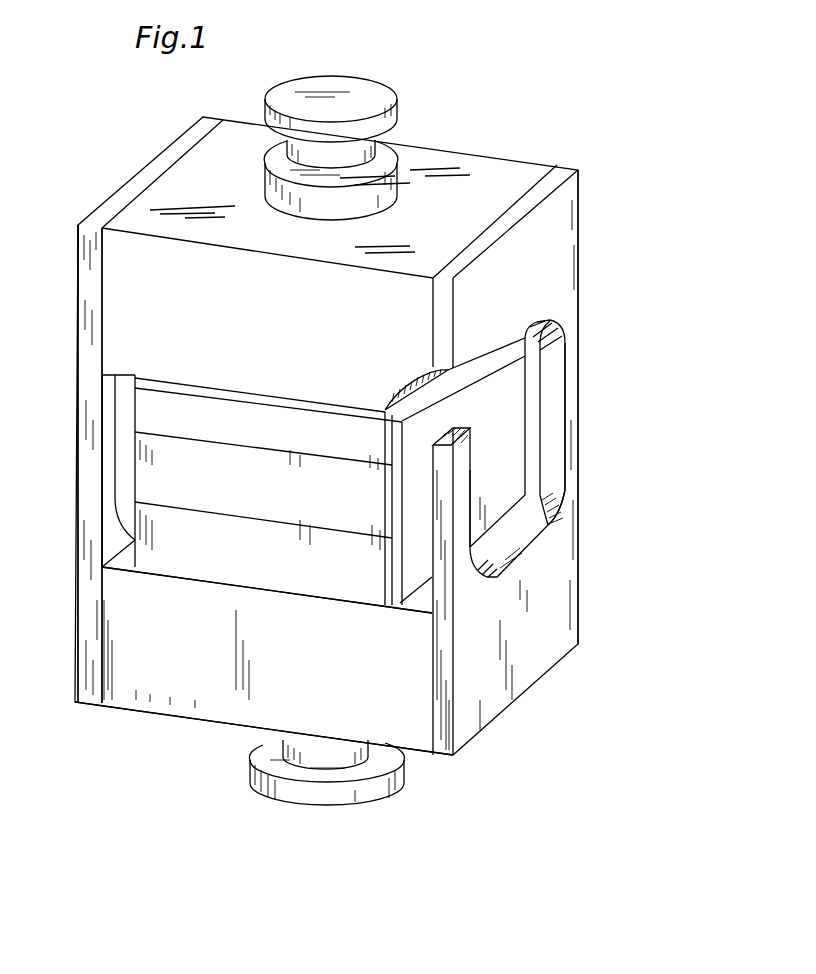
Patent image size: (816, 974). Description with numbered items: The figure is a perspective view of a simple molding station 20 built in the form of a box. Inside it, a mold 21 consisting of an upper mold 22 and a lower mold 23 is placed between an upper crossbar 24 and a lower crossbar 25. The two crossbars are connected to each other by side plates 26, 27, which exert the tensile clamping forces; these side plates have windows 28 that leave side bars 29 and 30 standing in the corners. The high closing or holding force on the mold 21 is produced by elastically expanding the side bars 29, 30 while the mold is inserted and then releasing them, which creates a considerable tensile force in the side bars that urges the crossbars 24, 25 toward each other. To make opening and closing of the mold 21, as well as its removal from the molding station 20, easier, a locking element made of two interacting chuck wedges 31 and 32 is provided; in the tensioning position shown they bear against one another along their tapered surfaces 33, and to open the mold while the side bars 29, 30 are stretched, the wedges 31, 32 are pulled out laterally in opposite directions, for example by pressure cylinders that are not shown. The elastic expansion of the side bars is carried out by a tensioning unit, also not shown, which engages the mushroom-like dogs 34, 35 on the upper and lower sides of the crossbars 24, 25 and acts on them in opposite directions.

The molding station 20 is at (513, 131).
The mold 21 is at (362, 617).
The upper mold 22 is at (160, 475).
The lower mold 23 is at (175, 560).
The upper crossbar 24 is at (518, 176).
The lower crossbar 25 is at (174, 688).
The side plate 26 is at (85, 273).
The side plate 27 is at (560, 275).
The window 28 is at (127, 417).
The side bar 29 is at (85, 466).
The side bar 30 is at (570, 415).
The chuck wedge 31 is at (464, 373).
The chuck wedge 32 is at (447, 406).
The tapered surfaces 33 is at (443, 368).
The mushroom-like dog 34 is at (348, 97).
The mushroom-like dog 35 is at (318, 786).